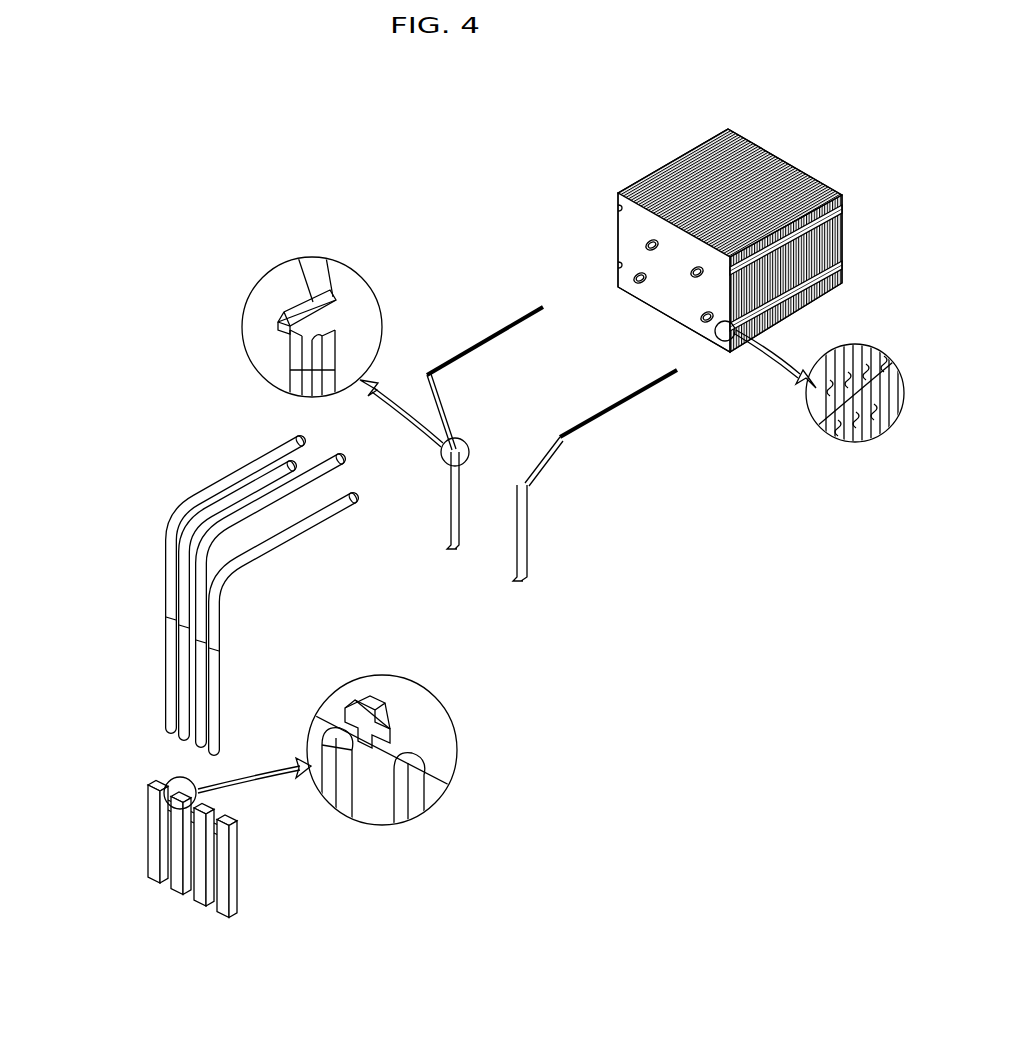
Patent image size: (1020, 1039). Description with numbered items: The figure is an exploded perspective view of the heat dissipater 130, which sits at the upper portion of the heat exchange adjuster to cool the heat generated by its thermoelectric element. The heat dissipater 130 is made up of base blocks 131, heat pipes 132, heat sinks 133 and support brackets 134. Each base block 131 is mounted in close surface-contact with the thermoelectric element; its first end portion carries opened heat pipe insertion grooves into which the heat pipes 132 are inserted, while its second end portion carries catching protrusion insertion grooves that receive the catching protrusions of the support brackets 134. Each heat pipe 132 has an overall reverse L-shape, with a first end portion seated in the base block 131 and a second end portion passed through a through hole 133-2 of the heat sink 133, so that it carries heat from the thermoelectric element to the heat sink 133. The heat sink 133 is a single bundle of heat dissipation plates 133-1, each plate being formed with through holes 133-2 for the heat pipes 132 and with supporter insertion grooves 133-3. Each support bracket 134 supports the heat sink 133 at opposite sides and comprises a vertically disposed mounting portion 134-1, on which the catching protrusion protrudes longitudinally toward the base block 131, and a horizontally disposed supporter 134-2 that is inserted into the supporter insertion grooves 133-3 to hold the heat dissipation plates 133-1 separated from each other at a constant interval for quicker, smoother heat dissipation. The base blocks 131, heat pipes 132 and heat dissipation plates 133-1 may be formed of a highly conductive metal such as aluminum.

The heat dissipater 130 is at (172, 127).
The base block 131 is at (152, 841).
The heat pipe 132 is at (178, 517).
The heat sink 133 is at (682, 152).
The heat dissipation plate 133-1 is at (618, 213).
The through hole 133-2 is at (646, 247).
The supporter insertion groove 133-3 is at (808, 405).
The support bracket 134 is at (502, 325).
The mounting portion 134-1 is at (453, 490).
The supporter 134-2 is at (480, 347).